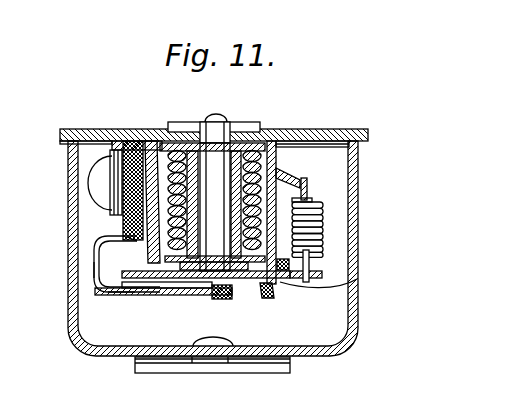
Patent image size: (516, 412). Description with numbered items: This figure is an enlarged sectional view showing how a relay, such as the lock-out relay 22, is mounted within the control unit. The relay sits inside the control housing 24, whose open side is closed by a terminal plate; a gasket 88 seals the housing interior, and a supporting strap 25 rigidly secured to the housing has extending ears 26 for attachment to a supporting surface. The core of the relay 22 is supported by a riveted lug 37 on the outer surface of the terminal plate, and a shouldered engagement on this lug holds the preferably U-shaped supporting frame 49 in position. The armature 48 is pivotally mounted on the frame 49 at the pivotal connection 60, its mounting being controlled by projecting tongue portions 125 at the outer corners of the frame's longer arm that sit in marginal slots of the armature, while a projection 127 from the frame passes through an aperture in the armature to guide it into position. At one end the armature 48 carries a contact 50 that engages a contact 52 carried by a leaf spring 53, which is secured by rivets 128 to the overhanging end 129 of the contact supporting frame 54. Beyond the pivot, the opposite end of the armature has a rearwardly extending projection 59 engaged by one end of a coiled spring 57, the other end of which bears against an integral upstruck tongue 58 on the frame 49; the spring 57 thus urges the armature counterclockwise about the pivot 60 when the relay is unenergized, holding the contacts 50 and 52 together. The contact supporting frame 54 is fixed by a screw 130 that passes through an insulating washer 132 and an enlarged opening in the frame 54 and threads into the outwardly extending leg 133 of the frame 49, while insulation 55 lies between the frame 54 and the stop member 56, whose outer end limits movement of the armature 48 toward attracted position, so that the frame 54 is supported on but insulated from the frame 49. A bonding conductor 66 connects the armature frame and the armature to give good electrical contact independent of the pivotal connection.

The lock-out relay 22 is at (218, 299).
The control housing 24 is at (70, 294).
The supporting strap 25 is at (135, 360).
The extending ears 26 is at (150, 364).
The riveted lug 37 is at (234, 122).
The armature 48 is at (256, 278).
The supporting frame 49 is at (283, 129).
The contact 50 is at (98, 278).
The contact 52 is at (125, 293).
The leaf spring 53 is at (160, 295).
The contact supporting frame 54 is at (125, 128).
The insulation 55 is at (157, 140).
The stop member 56 is at (143, 142).
The coiled spring 57 is at (316, 219).
The upstruck tongue 58 is at (302, 190).
The projection 59 is at (306, 274).
The pivotal connection 60 is at (331, 283).
The bonding conductor 66 is at (302, 250).
The gasket 88 is at (62, 140).
The projecting tongue portions 125 is at (280, 282).
The projection 127 is at (267, 290).
The rivets 128 is at (228, 336).
The overhanging end 129 is at (197, 291).
The screw 130 is at (92, 177).
The insulating washer 132 is at (127, 237).
The outwardly extending leg 133 is at (108, 240).